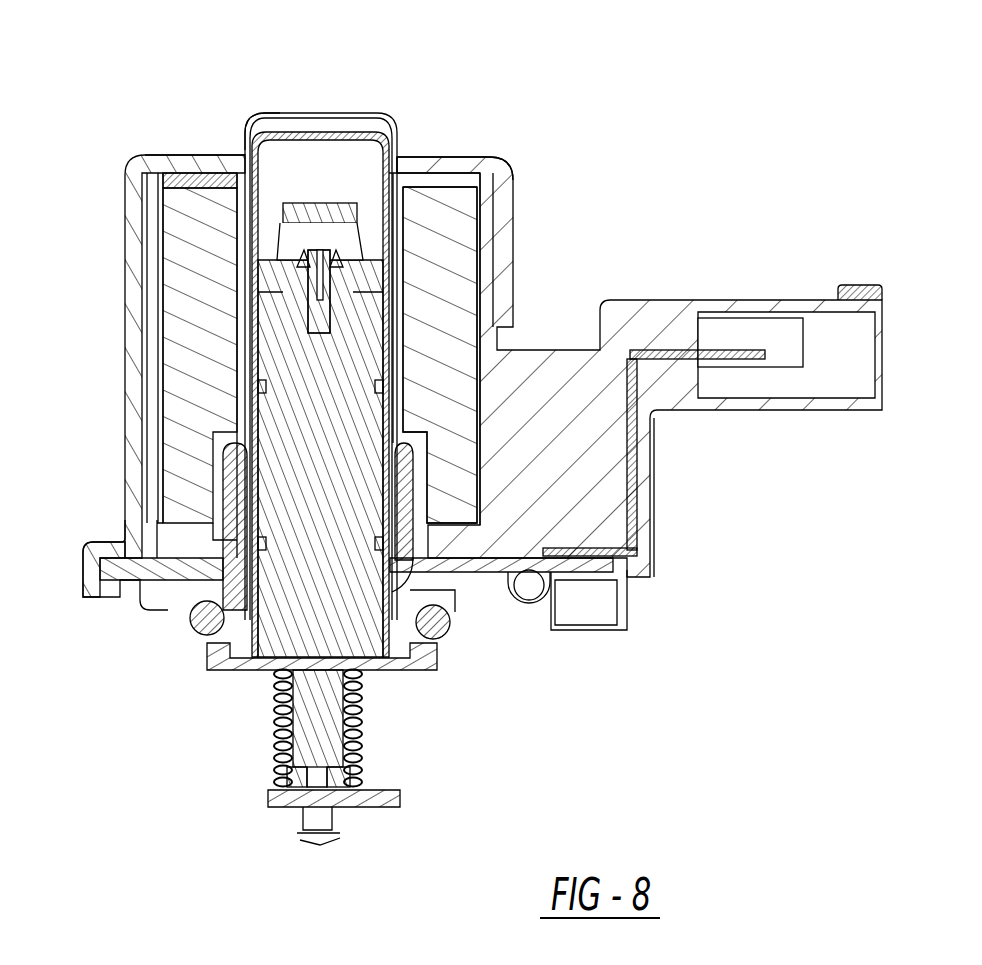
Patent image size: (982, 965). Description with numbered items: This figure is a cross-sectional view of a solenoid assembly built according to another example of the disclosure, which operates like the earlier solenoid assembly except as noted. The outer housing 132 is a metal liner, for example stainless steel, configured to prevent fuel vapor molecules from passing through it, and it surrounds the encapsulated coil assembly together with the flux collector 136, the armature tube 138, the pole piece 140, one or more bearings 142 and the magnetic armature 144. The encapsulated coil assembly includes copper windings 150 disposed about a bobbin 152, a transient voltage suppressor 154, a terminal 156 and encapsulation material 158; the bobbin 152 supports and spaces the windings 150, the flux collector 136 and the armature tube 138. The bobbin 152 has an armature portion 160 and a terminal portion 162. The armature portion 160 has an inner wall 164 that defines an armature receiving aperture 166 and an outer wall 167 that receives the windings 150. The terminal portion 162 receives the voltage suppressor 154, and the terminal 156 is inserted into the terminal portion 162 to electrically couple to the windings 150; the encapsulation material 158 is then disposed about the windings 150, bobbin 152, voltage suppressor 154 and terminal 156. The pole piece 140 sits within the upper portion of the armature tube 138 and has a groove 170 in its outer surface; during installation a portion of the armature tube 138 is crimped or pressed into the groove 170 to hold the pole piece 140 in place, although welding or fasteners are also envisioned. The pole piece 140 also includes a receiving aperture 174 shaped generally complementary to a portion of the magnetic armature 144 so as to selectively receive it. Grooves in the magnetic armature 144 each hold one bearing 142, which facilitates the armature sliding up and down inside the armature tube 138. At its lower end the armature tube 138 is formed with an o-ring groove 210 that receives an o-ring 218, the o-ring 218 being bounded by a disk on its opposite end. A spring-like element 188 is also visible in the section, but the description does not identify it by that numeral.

The outer housing 132 is at (133, 190).
The flux collector 136 is at (120, 606).
The armature tube 138 is at (293, 237).
The pole piece 140 is at (312, 165).
The bearing 142 is at (315, 485).
The magnetic armature 144 is at (448, 418).
The windings 150 is at (200, 390).
The bobbin 152 is at (400, 227).
The transient voltage suppressor 154 is at (522, 598).
The terminal 156 is at (748, 352).
The encapsulation material 158 is at (153, 292).
The armature portion 160 is at (442, 132).
The terminal portion 162 is at (548, 154).
The inner wall 164 is at (395, 160).
The armature receiving aperture 166 is at (215, 150).
The outer wall 167 is at (400, 280).
The groove 170 is at (247, 123).
The receiving aperture 174 is at (340, 250).
The spring 188 is at (320, 712).
The o-ring groove 210 is at (190, 605).
The o-ring 218 is at (200, 600).